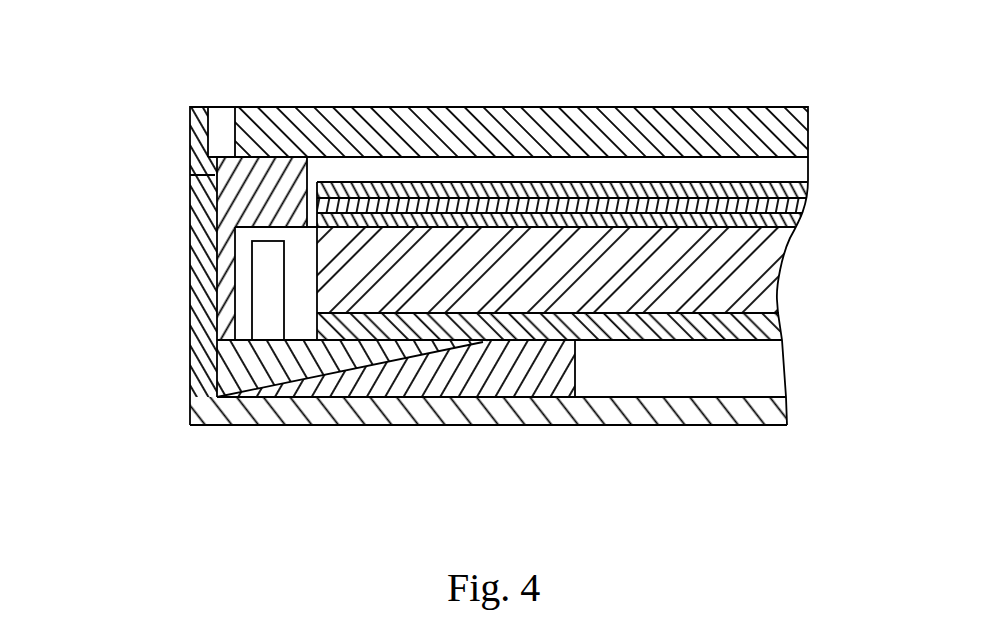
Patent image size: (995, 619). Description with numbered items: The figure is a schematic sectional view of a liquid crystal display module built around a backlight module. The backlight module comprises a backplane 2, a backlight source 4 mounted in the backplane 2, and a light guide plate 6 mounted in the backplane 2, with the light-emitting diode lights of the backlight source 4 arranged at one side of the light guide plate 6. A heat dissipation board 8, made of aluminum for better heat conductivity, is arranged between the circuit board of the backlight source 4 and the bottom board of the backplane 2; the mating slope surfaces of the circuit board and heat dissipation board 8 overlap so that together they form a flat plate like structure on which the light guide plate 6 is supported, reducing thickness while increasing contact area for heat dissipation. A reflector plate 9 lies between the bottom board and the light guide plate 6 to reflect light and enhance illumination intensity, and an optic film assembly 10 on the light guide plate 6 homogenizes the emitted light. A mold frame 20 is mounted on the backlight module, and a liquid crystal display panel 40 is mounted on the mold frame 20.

The backplane 2 is at (203, 316).
The backlight source 4 is at (245, 362).
The light guide plate 6 is at (712, 280).
The heat dissipation board 8 is at (413, 385).
The reflector plate 9 is at (690, 323).
The optic film assembly 10 is at (735, 195).
The mold frame 20 is at (236, 187).
The liquid crystal display panel 40 is at (490, 120).